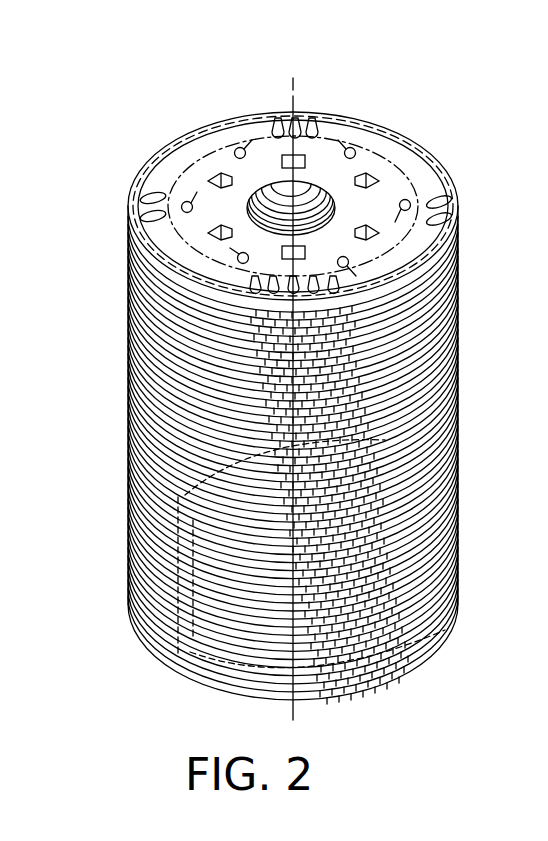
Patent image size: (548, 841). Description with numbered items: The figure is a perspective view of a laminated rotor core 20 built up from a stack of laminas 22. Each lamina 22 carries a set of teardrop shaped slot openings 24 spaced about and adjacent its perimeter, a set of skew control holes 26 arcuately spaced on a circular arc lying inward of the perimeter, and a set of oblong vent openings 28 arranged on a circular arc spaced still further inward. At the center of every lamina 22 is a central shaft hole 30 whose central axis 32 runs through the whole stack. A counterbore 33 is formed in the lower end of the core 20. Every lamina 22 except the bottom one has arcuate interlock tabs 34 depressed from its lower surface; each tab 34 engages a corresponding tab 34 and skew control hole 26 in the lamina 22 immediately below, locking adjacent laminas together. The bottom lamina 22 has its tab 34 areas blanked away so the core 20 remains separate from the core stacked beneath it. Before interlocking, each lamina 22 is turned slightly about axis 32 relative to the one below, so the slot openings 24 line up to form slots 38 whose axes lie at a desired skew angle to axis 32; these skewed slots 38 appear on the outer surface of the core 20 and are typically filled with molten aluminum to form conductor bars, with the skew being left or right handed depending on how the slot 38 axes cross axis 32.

The laminated rotor core 20 is at (140, 668).
The lamina 22 is at (150, 274).
The teardrop shaped slot opening 24 is at (280, 118).
The skew control hole 26 is at (215, 176).
The oblong vent opening 28 is at (235, 150).
The central shaft hole 30 is at (280, 200).
The central axis 32 is at (295, 706).
The counterbore 33 is at (197, 555).
The arcuate interlock tab 34 is at (248, 142).
The slot 38 is at (398, 433).